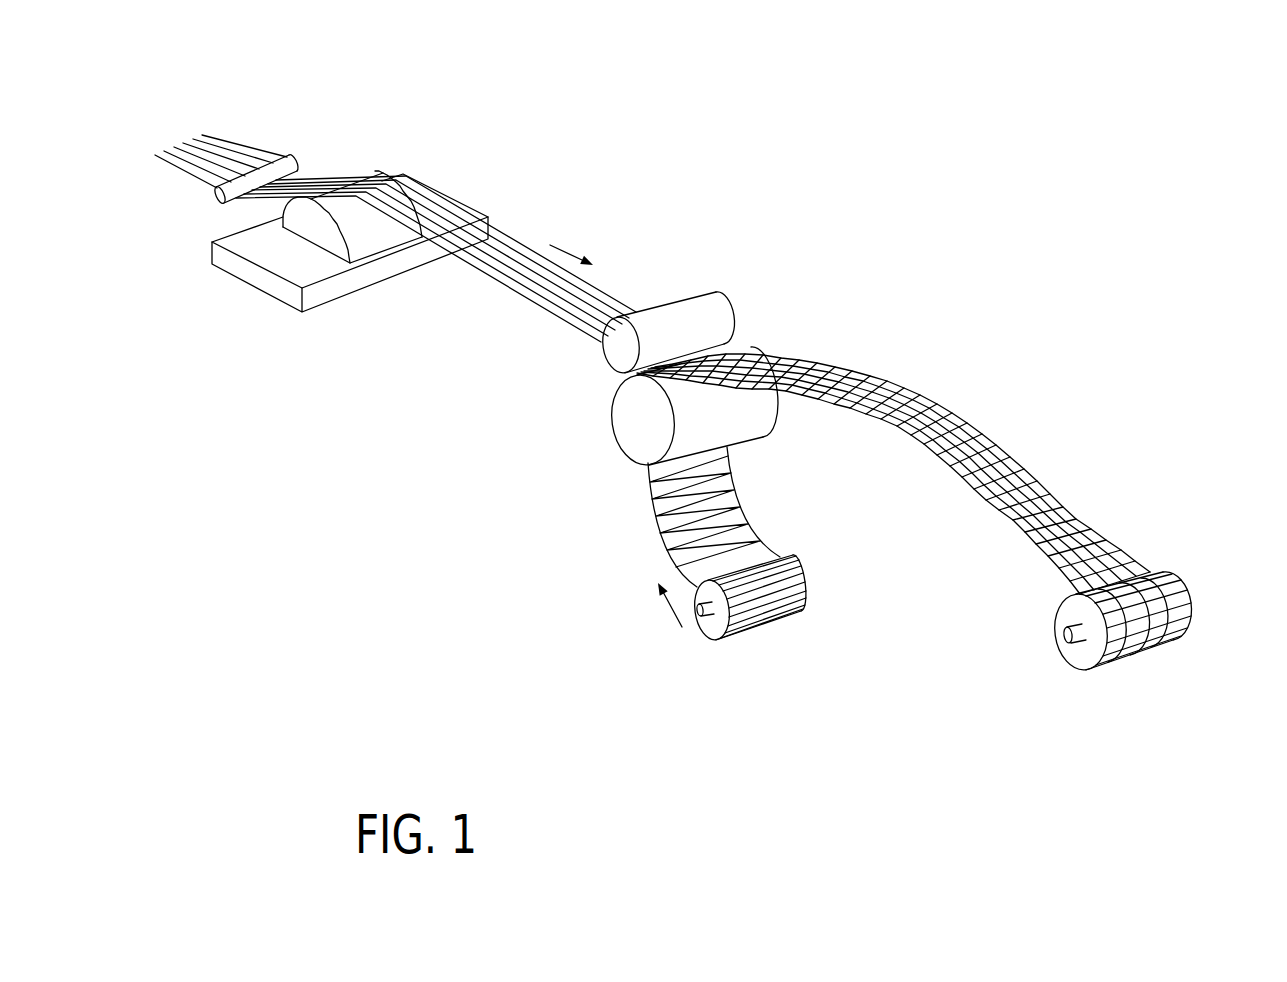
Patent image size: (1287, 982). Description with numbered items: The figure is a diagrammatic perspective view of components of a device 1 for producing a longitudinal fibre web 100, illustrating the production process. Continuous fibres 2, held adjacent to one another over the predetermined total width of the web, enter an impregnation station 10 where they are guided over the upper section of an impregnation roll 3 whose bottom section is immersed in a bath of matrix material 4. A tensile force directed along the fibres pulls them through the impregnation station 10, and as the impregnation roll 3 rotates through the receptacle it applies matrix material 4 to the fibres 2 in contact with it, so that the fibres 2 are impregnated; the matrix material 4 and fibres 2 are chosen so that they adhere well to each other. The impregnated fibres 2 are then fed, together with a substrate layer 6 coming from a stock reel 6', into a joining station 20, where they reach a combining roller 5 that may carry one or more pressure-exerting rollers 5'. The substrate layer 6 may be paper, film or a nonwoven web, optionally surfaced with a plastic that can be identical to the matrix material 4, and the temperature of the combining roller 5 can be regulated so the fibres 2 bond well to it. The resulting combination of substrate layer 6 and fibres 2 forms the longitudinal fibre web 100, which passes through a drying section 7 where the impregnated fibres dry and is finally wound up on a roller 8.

The device 1 is at (868, 181).
The fibres 2 is at (180, 170).
The impregnation roll 3 is at (315, 230).
The matrix material 4 is at (443, 203).
The combining roller 5 is at (627, 413).
The pressure-exerting roller 5' is at (600, 353).
The substrate layer 6 is at (644, 537).
The stock reel 6' is at (668, 631).
The drying section 7 is at (1056, 435).
The roller 8 is at (1083, 653).
The impregnation station 10 is at (495, 177).
The joining station 20 is at (739, 252).
The longitudinal fibre web 100 is at (1063, 498).